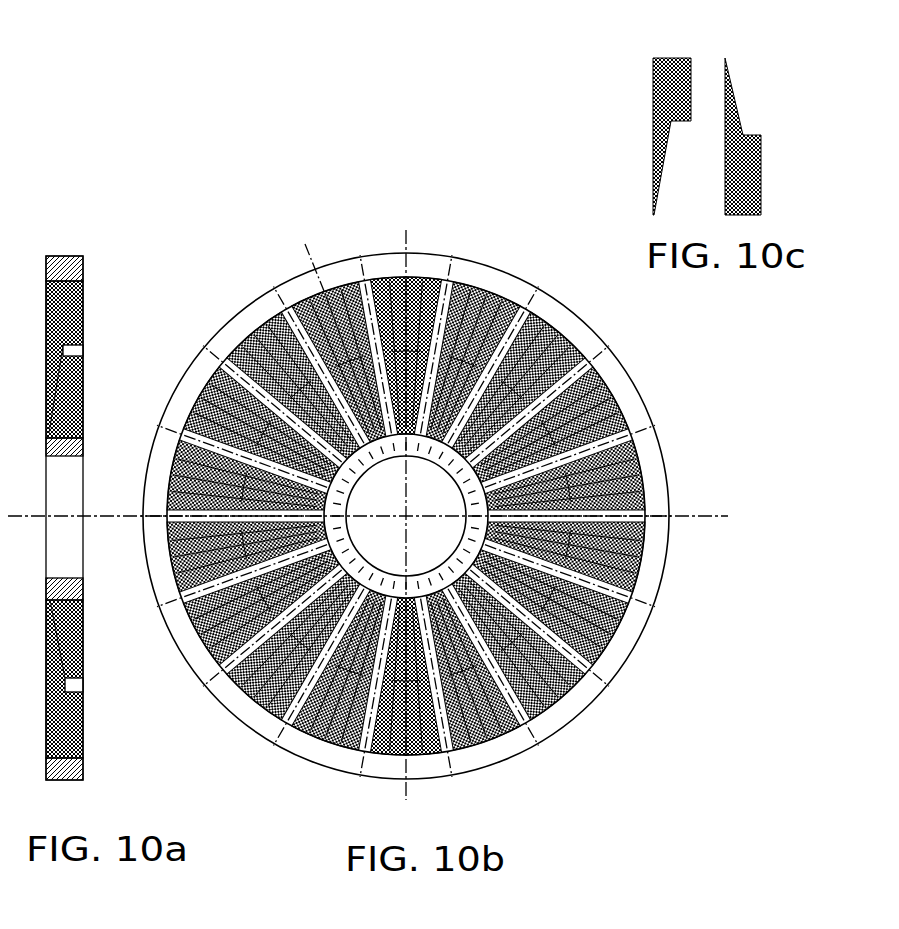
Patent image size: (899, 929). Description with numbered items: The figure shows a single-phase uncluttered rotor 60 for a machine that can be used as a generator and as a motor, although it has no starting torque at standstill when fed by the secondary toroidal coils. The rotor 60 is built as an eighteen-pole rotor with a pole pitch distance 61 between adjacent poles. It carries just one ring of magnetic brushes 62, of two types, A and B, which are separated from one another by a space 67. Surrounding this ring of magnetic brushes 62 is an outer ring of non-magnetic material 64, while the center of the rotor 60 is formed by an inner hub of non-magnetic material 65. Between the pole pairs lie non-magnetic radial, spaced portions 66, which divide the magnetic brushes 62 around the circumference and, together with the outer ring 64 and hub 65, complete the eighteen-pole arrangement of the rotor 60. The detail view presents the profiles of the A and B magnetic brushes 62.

In FIG. 10b, the uncluttered rotor 60 is at (432, 503).
In FIG. 10b, the pole pitch distance 61 is at (395, 228).
In FIG. 10a, the magnetic brushes 62 is at (75, 308).
In FIG. 10b, the magnetic brushes 62 is at (540, 325).
In FIG. 10c, the magnetic brushes 62 is at (645, 148).
In FIG. 10a, the outer ring of non-magnetic material 64 is at (75, 263).
In FIG. 10b, the outer ring of non-magnetic material 64 is at (625, 613).
In FIG. 10a, the inner hub of non-magnetic material 65 is at (75, 440).
In FIG. 10b, the inner hub of non-magnetic material 65 is at (455, 554).
In FIG. 10b, the non-magnetic radial spaced portions 66 is at (518, 697).
In FIG. 10a, the space 67 is at (75, 345).
In FIG. 10b, the space 67 is at (632, 465).